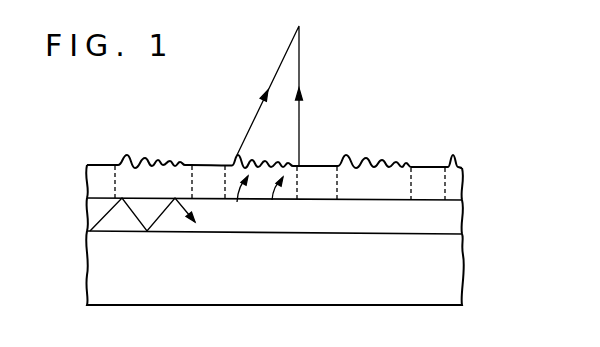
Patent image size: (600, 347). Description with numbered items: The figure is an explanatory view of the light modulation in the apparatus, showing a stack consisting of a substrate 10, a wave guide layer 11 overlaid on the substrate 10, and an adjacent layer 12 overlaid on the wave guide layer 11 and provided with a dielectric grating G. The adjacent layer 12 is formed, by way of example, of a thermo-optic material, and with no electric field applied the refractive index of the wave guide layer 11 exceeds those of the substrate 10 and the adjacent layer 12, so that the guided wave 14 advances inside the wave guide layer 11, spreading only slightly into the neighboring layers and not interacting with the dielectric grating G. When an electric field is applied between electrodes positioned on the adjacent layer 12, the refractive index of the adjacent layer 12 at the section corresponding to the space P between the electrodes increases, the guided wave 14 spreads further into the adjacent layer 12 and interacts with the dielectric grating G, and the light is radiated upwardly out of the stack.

The substrate 10 is at (449, 274).
The wave guide layer 11 is at (451, 220).
The adjacent layer 12 is at (451, 180).
The guided wave 14 is at (133, 222).
The dielectric grating G is at (277, 161).
The space between the electrodes P is at (298, 185).